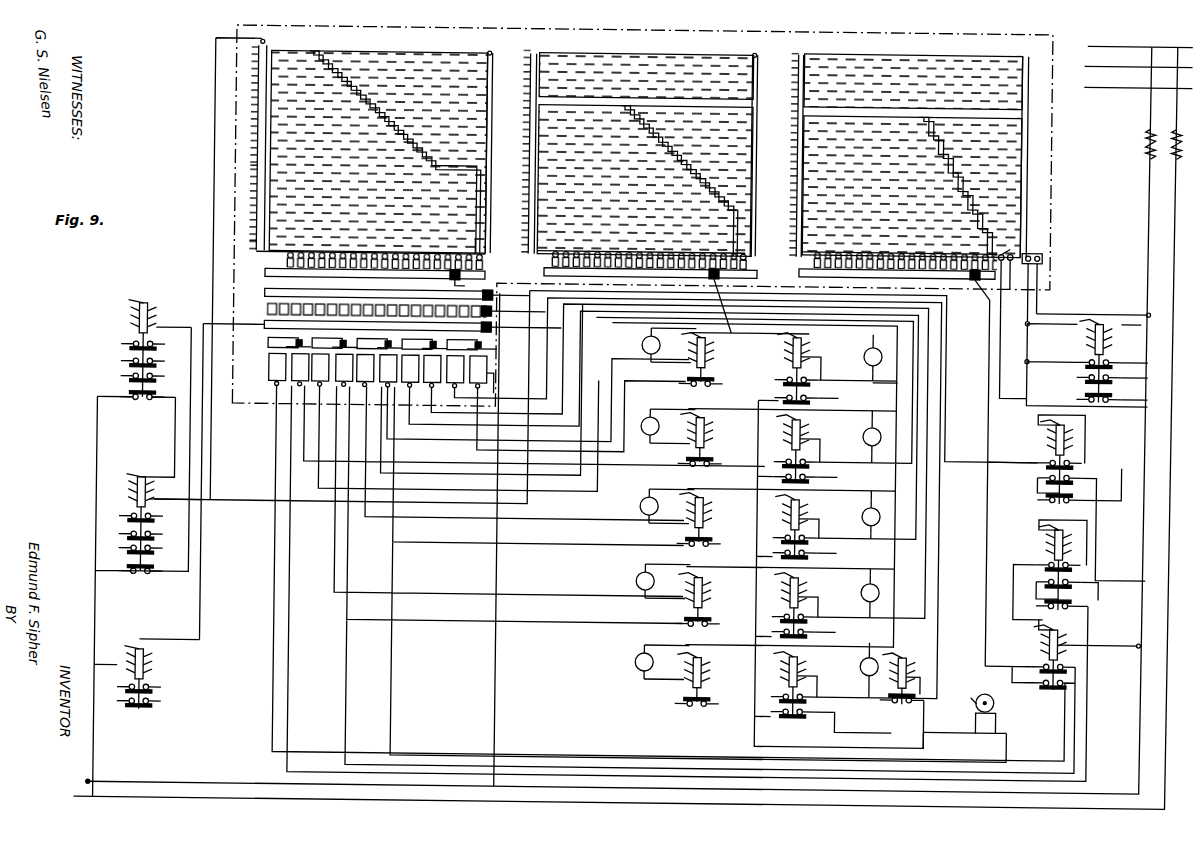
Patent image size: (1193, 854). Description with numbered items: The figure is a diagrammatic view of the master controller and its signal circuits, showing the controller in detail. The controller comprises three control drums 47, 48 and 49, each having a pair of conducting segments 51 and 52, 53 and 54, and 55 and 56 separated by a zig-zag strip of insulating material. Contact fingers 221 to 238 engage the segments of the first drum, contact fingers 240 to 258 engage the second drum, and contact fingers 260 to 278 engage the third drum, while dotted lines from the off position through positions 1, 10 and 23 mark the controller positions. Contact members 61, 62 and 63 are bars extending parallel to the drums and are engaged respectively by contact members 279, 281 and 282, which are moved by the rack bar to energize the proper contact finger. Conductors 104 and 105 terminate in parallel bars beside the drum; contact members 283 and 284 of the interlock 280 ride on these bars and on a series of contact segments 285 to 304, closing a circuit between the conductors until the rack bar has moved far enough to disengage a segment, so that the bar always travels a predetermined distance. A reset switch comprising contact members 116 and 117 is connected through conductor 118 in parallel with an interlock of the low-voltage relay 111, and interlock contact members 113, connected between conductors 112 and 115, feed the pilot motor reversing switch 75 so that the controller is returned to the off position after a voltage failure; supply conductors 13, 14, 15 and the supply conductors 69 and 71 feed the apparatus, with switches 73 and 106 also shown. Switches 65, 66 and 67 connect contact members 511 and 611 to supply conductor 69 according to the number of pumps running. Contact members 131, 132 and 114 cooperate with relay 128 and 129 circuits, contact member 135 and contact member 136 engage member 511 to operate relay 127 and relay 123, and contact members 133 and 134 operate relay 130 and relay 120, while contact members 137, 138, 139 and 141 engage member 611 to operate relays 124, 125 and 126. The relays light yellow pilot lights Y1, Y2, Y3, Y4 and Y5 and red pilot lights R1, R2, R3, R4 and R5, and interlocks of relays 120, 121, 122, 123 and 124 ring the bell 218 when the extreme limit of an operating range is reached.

The conducting segment 56 is at (302, 48).
The control section or drum 49 is at (388, 47).
The conducting segment 55 is at (456, 50).
The control section or drum 48 is at (626, 44).
The conducting segment 53 is at (710, 50).
The control section or drum 47 is at (886, 42).
The conducting segment 51 is at (996, 52).
The supply line 13 is at (1122, 38).
The supply line 14 is at (1101, 58).
The supply line 15 is at (1122, 74).
The controller position 23' 23 is at (250, 144).
The controller position 10' 10 is at (247, 165).
The controller position 1' 1 is at (246, 237).
The conducting segment 54 is at (531, 136).
The conducting segment 52 is at (794, 145).
The contact finger 258 is at (545, 235).
The contact finger 260 is at (488, 242).
The contact member 282 is at (460, 266).
The contact finger 238 is at (833, 255).
The contact finger 240 is at (752, 250).
The contact finger 221 is at (1013, 244).
The contact member 117 is at (1034, 244).
The contact member 116 is at (1046, 254).
The contact members 113 is at (1036, 262).
The supply conductor 71 is at (188, 798).
The supply circuit conductor 69 is at (144, 784).
The contact finger 278 is at (216, 255).
The contact member 63 is at (268, 274).
The contact member 62 is at (546, 271).
The contact member 61 is at (802, 267).
The contact member 279 is at (990, 300).
The conductor 118 is at (1130, 306).
The interlock 280 is at (258, 298).
The contact segment 304 is at (270, 310).
The contact member 283 is at (497, 292).
The contact segment 285 is at (497, 308).
The contact member 284 is at (497, 324).
The contact member 611 is at (272, 337).
The conducting member 511 is at (483, 342).
The contact member 141 is at (272, 356).
The contact member 139 is at (272, 372).
The contact member 136 is at (295, 386).
The contact member 135 is at (300, 402).
The contact 114 is at (335, 385).
The contact 132 is at (364, 385).
The contact member 131 is at (392, 384).
The contact member 137 is at (413, 384).
The contact member 138 is at (430, 384).
The contact member 133 is at (472, 386).
The contact member 134 is at (489, 370).
The relay 73 is at (126, 334).
The pilot motor reversing switch 75 is at (126, 492).
The relay 106 is at (121, 662).
The conductor 115 is at (242, 500).
The conductor 105 is at (205, 586).
The conductor 104 is at (492, 576).
The yellow pilot light Y3 is at (644, 342).
The yellow pilot light Y5 is at (644, 424).
The yellow pilot light Y1 is at (644, 502).
The yellow pilot light Y2 is at (641, 577).
The yellow signal light Y4 is at (641, 657).
The relay 130 is at (734, 360).
The relay 129 is at (734, 440).
The relay 128 is at (734, 520).
The relay 127 is at (734, 600).
The relay 126 is at (734, 679).
The contact member 281 is at (731, 326).
The red pilot light R3 is at (864, 357).
The red pilot light R5 is at (863, 436).
The red pilot light R1 is at (862, 514).
The red pilot light R2 is at (861, 592).
The red signal light R4 is at (860, 669).
The relay 120 is at (834, 374).
The relay 121 is at (834, 456).
The relay 122 is at (834, 536).
The relay 123 is at (834, 614).
The relay 124 is at (834, 694).
The relay 125 is at (918, 690).
The bell 218 is at (1032, 714).
The low-voltage relay 111 is at (1078, 342).
The conductor 112 is at (998, 386).
The switch 67 is at (1044, 432).
The switch 66 is at (1041, 537).
The switch 65 is at (1038, 639).